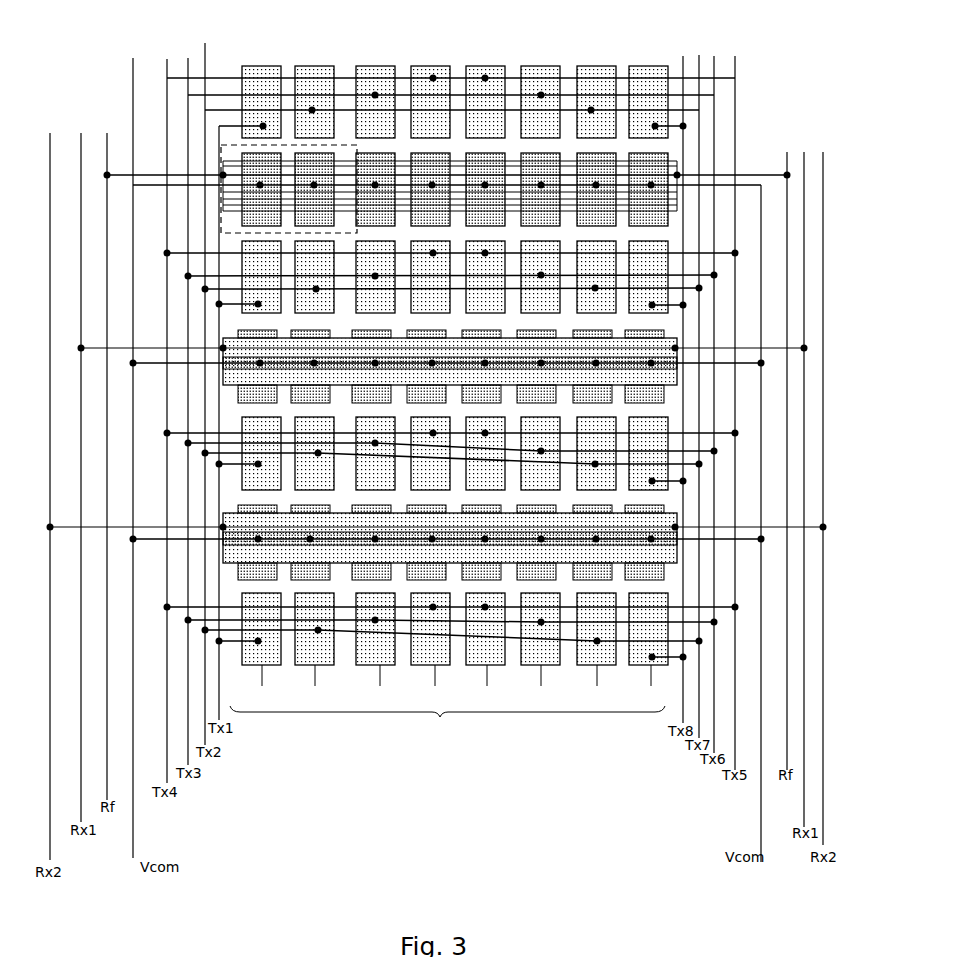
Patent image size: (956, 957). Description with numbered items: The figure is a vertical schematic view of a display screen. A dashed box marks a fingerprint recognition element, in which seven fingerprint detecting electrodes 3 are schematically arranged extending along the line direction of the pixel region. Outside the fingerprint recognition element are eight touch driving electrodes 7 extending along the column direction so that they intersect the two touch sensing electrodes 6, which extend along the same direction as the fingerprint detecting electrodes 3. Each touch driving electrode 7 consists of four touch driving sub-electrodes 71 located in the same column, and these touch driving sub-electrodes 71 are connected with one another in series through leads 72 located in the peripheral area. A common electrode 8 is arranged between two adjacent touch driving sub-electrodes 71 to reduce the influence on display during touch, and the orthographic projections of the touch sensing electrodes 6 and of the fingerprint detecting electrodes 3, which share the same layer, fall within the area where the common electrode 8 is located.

The touch driving sub-electrode 71 is at (270, 79).
The lead 72 is at (703, 364).
The common electrode 8 is at (455, 121).
The fingerprint detecting electrode 3 is at (501, 159).
The touch driving electrode 7 is at (449, 380).
The touch sensing electrode 6 is at (450, 543).